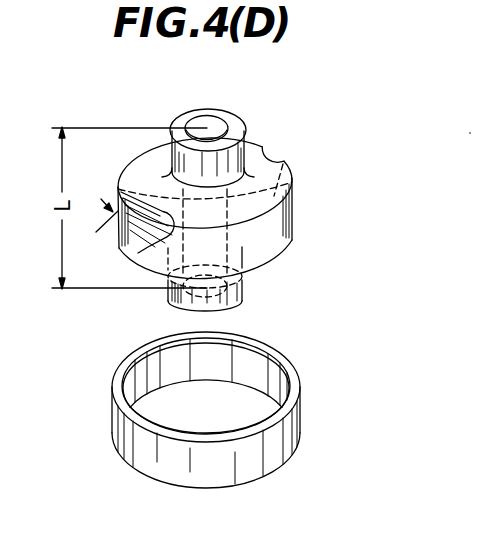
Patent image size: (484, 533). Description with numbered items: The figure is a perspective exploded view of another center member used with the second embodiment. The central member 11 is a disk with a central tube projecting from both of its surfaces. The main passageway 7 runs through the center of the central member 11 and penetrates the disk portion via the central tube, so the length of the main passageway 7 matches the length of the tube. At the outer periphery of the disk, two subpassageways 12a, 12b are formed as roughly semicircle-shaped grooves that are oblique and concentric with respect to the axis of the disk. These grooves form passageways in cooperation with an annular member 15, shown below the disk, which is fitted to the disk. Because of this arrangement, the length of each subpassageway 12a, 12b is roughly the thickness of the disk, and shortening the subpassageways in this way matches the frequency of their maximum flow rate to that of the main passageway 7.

The main passageway 7 is at (200, 116).
The central member 11 is at (281, 306).
The subpassageway 12a is at (282, 162).
The subpassageway 12b is at (131, 255).
The annular member 15 is at (284, 432).